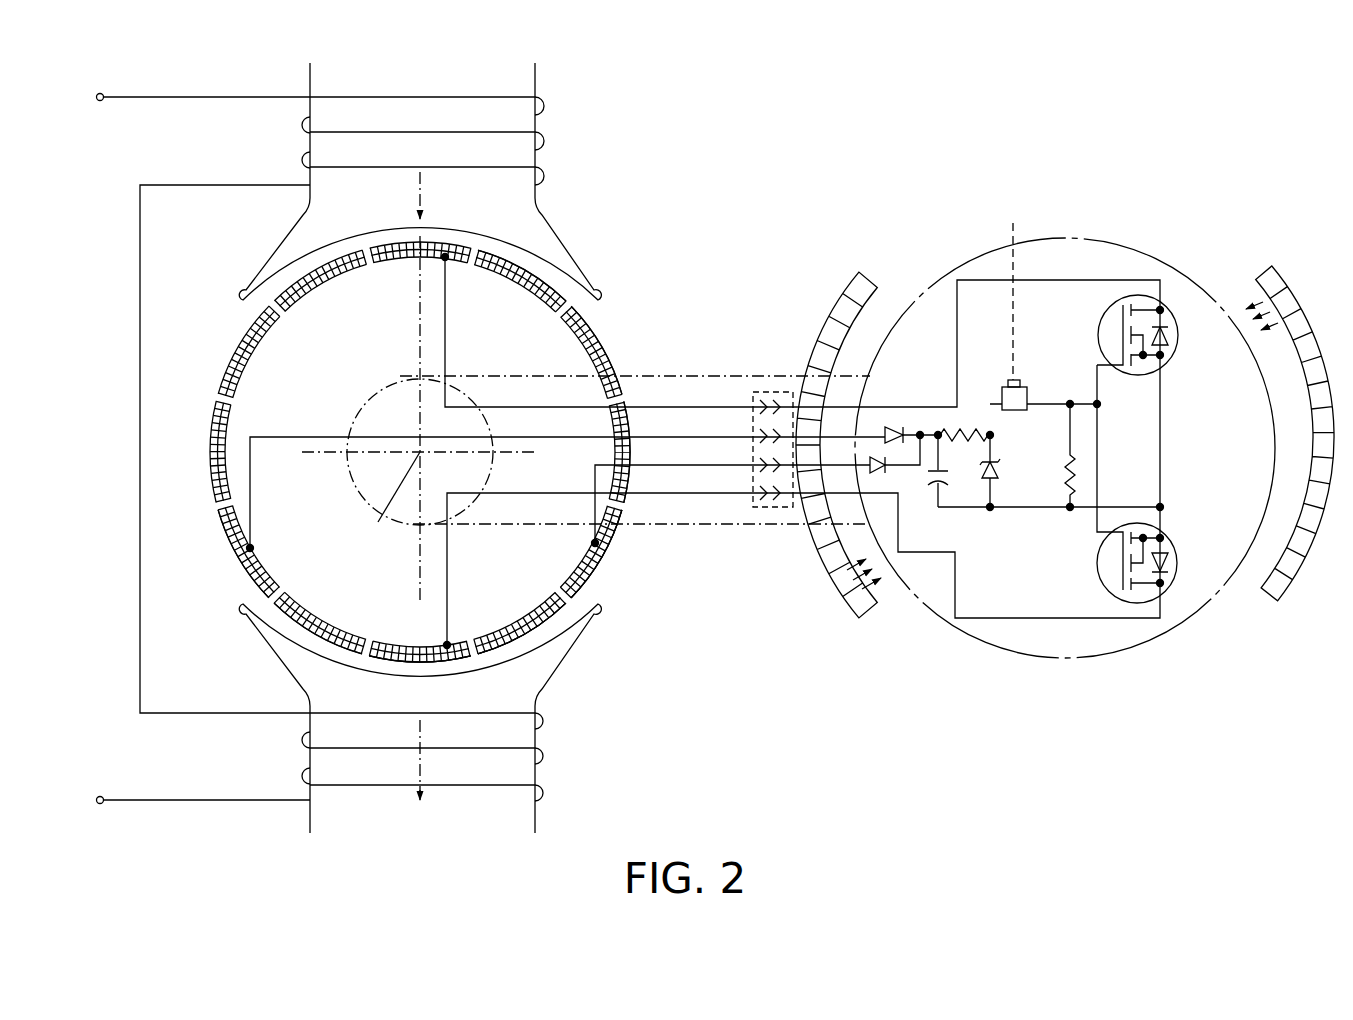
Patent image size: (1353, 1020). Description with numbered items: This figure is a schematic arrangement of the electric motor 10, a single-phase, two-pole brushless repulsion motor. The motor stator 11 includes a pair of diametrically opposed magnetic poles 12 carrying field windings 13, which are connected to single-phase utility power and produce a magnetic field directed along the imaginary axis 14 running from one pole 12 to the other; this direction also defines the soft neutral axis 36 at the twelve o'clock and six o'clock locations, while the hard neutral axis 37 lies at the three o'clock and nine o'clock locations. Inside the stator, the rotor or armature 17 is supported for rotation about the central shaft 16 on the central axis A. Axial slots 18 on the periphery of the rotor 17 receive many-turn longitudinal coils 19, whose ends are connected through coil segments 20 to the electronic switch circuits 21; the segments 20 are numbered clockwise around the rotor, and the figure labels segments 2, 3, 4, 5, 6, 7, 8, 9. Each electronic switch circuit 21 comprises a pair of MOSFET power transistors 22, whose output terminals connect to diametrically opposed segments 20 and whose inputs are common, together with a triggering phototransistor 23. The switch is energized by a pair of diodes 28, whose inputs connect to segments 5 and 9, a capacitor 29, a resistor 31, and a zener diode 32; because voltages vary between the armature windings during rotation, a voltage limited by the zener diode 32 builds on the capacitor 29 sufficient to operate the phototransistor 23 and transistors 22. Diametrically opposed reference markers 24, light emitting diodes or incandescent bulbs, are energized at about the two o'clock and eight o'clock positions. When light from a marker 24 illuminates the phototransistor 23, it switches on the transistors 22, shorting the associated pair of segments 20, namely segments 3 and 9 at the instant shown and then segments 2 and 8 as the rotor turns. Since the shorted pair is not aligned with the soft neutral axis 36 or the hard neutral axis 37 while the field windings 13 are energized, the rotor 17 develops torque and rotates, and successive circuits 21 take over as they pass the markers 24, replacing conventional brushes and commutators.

The electric motor 10 is at (838, 111).
The motor stator 11 is at (558, 211).
The magnetic poles 12 is at (322, 229).
The field windings 13 is at (521, 132).
The axis 14 is at (415, 182).
The central shaft 16 is at (357, 500).
The rotor 17 is at (608, 340).
The axial slots 18 is at (535, 623).
The coils 19 is at (558, 608).
The coil segments 20 is at (604, 563).
The electronic switch circuit 21 is at (1202, 266).
The MOSFET transistors 22 is at (1133, 297).
The phototransistor 23 is at (1027, 393).
The reference markers 24 is at (845, 300).
The diodes 28 is at (873, 460).
The capacitor 29 is at (942, 485).
The resistor 31 is at (960, 428).
The zener diode 32 is at (1000, 468).
The soft neutral axis 36 is at (415, 336).
The hard neutral axis 37 is at (339, 454).
The coil segment numbered two 2 is at (522, 278).
The coil segment numbered three 3 is at (596, 350).
The armature segment 4 is at (615, 452).
The coil segment numbered five 5 is at (596, 554).
The armature segment 6 is at (522, 622).
The coil segment numbered seven 7 is at (420, 641).
The coil segment numbered eight 8 is at (318, 624).
The coil segment numbered nine 9 is at (243, 554).